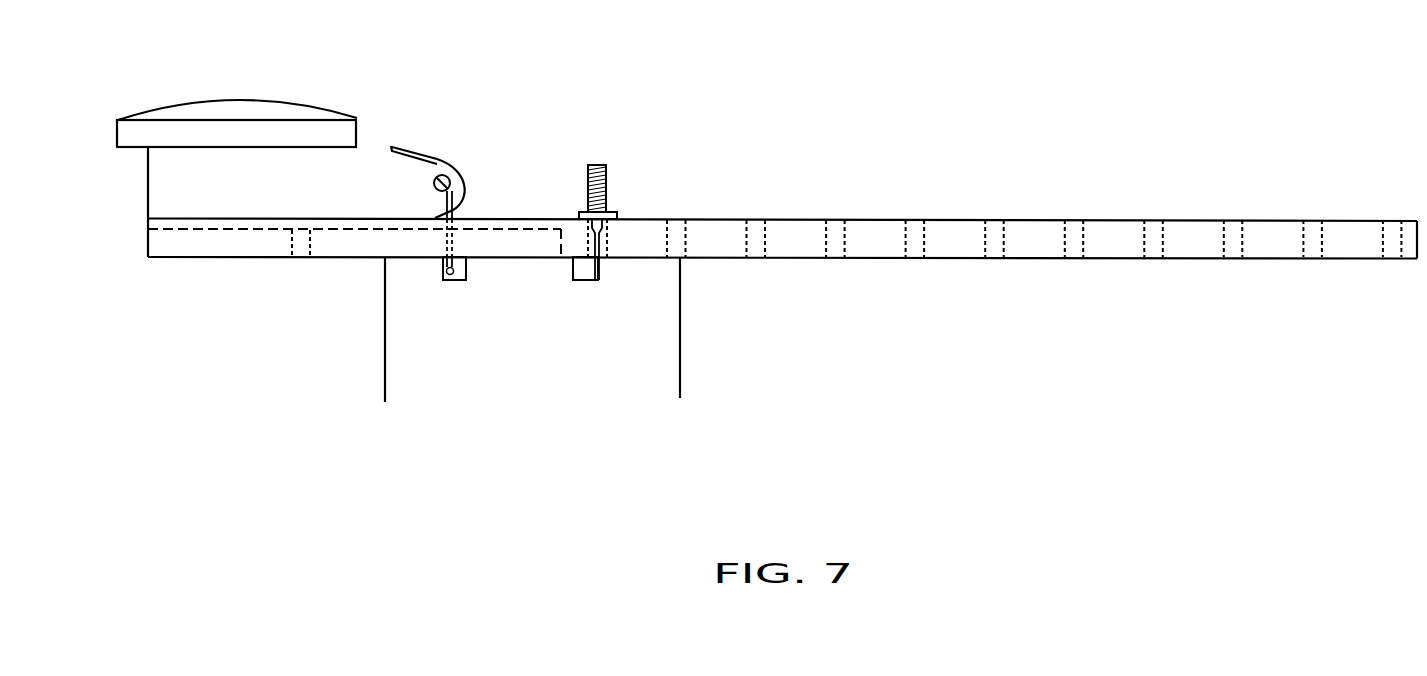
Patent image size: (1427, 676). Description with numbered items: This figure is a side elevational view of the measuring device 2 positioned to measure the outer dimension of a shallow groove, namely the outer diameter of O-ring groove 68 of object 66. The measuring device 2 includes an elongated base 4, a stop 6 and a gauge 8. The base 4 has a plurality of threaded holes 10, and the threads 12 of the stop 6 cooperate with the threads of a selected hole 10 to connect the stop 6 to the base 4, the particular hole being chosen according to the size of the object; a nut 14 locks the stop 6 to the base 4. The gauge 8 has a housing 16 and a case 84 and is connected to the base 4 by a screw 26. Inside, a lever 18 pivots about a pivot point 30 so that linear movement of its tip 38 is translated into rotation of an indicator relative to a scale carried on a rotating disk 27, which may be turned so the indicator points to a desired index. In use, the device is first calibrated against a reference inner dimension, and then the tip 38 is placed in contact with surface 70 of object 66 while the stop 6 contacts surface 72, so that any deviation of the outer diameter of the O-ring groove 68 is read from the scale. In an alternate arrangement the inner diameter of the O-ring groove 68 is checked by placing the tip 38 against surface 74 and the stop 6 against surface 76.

The measuring device 2 is at (796, 412).
The base 4 is at (949, 235).
The stop 6 is at (608, 250).
The gauge 8 is at (293, 198).
The threaded holes 10 is at (602, 266).
The threads 12 is at (607, 193).
The nut 14 is at (618, 215).
The housing 16 is at (360, 158).
The lever 18 is at (452, 243).
The screw 26 is at (292, 258).
The rotating disk 27 is at (333, 130).
The pivot point 30 is at (462, 195).
The tip 38 is at (463, 280).
The object 66 is at (637, 385).
The O-ring groove 68 is at (465, 275).
The surface 70 is at (443, 278).
The surface 72 is at (597, 282).
The surface 74 is at (458, 272).
The surface 76 is at (572, 273).
The case 84 is at (158, 182).